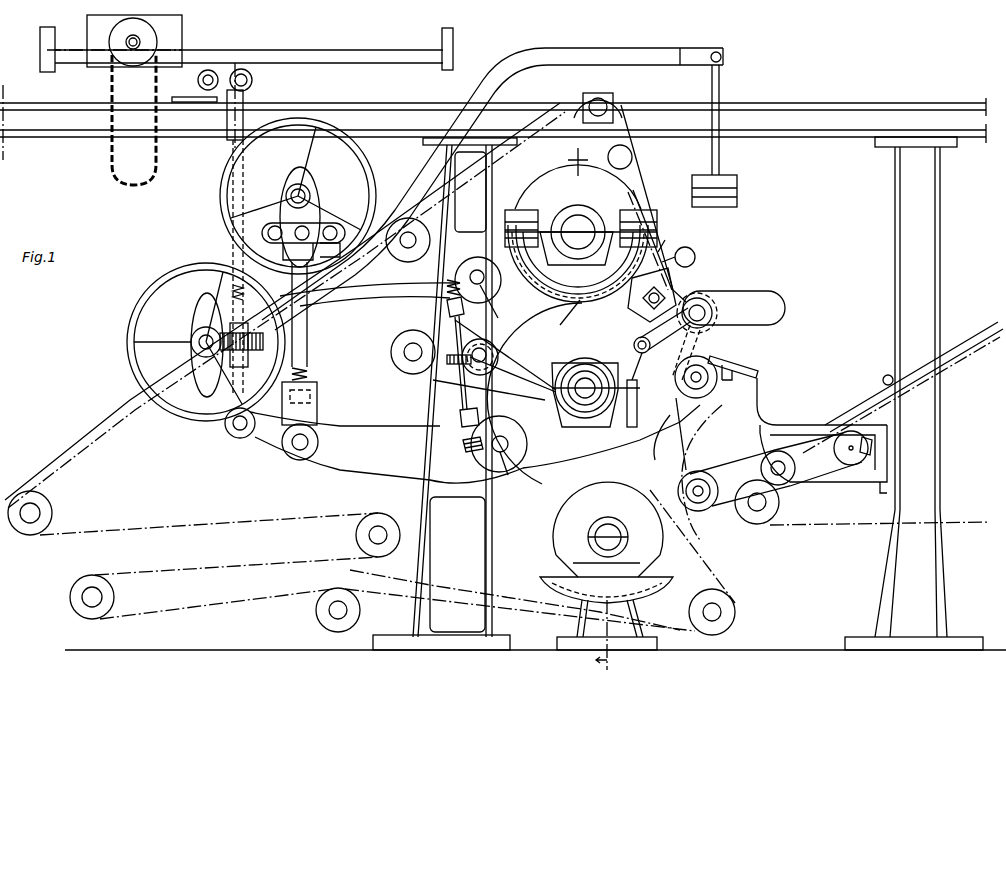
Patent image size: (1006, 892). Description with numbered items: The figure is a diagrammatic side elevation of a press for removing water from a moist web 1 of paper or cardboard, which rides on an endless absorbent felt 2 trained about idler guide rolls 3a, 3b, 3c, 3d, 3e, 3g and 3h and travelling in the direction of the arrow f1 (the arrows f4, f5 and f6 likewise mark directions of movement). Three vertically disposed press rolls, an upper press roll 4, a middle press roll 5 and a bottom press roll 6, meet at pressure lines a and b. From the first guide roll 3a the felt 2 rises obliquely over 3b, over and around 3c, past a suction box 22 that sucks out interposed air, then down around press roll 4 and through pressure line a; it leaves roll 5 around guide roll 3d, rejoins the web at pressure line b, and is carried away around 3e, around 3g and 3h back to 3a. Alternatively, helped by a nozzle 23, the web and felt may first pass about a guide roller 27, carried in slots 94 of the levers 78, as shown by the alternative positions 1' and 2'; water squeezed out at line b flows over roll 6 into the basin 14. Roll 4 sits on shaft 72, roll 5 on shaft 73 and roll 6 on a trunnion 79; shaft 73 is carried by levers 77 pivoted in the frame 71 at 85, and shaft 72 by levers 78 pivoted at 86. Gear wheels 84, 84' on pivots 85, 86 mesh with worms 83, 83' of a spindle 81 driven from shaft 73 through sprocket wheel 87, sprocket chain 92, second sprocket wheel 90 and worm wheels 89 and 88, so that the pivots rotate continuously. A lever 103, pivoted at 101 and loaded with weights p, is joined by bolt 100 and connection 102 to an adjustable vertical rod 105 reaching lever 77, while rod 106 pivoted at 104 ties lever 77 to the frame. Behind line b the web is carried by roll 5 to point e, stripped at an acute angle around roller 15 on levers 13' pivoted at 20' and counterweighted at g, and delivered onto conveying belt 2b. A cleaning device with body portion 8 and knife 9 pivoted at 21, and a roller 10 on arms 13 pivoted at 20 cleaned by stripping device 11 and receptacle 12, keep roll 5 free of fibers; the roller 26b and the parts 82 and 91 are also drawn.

The web 1 is at (347, 290).
The alternative position of web 1' is at (654, 240).
The endless band of absorbent material (felt) 2 is at (371, 397).
The alternative position of conveying belt 2' is at (672, 238).
The conveying belt 2b is at (975, 325).
The guide roll 3a is at (36, 530).
The guide roll 3b is at (407, 240).
The guide roll 3c is at (612, 98).
The guide roll 3d is at (413, 352).
The guide roll 3e is at (736, 616).
The guide roll 3g is at (215, 603).
The guide roll 3h is at (378, 535).
The upper press roll 4 is at (581, 225).
The middle press roll 5 is at (572, 452).
The bottom press roll 6 is at (600, 462).
The body portion 8 is at (734, 308).
The knife 9 is at (703, 350).
The roller 10 is at (712, 393).
The stripping device 11 is at (742, 362).
The receptacle 12 is at (762, 405).
The arms 13 is at (646, 390).
The levers 13' is at (776, 469).
The basin 14 is at (545, 590).
The guide roller 15 is at (703, 478).
The pivot 20 is at (651, 330).
The pivot 20' is at (786, 474).
The pivot 21 is at (712, 320).
The suction box 22 is at (634, 157).
The nozzle 23 is at (692, 250).
The roller 26b is at (763, 518).
The guide roller 27 is at (672, 280).
The frame 71 is at (445, 394).
The shaft 72 is at (585, 218).
The shaft 73 is at (596, 392).
The lever 77 is at (475, 444).
The lever 78 is at (367, 290).
The trunnion 79 is at (608, 537).
The spindle 81 is at (458, 395).
The bracket 82 is at (462, 425).
The worm 83 is at (459, 452).
The worm 83' is at (426, 300).
The gear wheel 84 is at (509, 455).
The gear wheel 84' is at (508, 219).
The pivot or spindle 85 is at (506, 473).
The pivot or spindle 86 is at (486, 294).
The sprocket wheel 87 is at (489, 387).
The worm wheel 88 is at (455, 364).
The worm wheel 89 is at (480, 347).
The second sprocket wheel 90 is at (500, 368).
The lever 91 is at (505, 355).
The sprocket chain 92 is at (560, 347).
The slots 94 is at (670, 295).
The bolt 100 is at (296, 445).
The pivotal connection 101 is at (280, 228).
The connection 102 is at (322, 232).
The lever 103 is at (478, 92).
The pivot 104 is at (228, 437).
The adjustable vertical rod 105 is at (308, 348).
The adjustable vertical rod 106 is at (240, 253).
The pressure line a is at (569, 318).
The pressure line b is at (662, 472).
The stripping point e is at (662, 437).
The counterweight g is at (850, 455).
The weights p is at (726, 180).
The arrow indicating direction of travel f1 is at (124, 390).
The direction arrow f4 is at (547, 172).
The direction arrow f5 is at (683, 442).
The direction arrow f6 is at (542, 526).